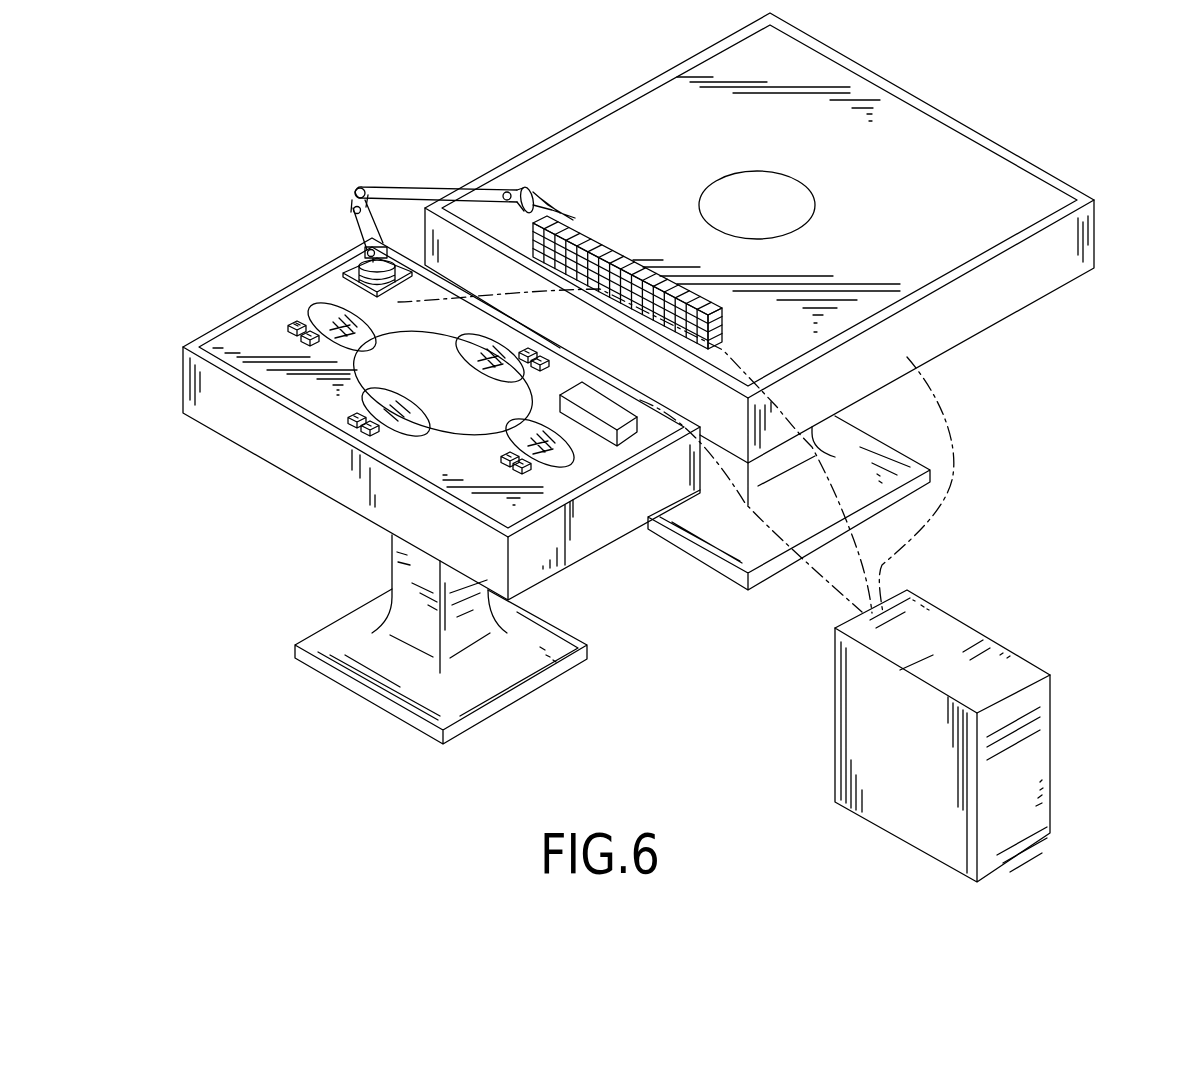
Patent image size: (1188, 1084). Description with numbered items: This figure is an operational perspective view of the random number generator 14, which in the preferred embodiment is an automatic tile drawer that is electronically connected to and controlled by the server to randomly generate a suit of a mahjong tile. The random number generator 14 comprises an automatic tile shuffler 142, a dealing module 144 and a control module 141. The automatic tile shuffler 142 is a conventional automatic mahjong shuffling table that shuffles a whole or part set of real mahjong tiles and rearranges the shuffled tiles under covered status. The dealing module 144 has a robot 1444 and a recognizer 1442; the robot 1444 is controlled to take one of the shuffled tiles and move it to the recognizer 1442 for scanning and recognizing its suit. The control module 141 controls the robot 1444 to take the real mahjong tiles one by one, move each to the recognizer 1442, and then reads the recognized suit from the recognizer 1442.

The random number generator 14 is at (545, 80).
The automatic tile shuffler 142 is at (1022, 152).
The control module 141 is at (1068, 739).
The dealing module 144 is at (340, 229).
The robot 1444 is at (357, 192).
The recognizer 1442 is at (606, 406).